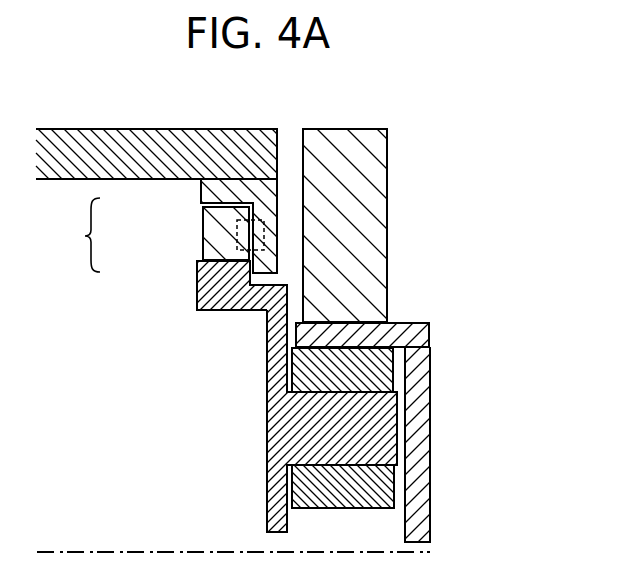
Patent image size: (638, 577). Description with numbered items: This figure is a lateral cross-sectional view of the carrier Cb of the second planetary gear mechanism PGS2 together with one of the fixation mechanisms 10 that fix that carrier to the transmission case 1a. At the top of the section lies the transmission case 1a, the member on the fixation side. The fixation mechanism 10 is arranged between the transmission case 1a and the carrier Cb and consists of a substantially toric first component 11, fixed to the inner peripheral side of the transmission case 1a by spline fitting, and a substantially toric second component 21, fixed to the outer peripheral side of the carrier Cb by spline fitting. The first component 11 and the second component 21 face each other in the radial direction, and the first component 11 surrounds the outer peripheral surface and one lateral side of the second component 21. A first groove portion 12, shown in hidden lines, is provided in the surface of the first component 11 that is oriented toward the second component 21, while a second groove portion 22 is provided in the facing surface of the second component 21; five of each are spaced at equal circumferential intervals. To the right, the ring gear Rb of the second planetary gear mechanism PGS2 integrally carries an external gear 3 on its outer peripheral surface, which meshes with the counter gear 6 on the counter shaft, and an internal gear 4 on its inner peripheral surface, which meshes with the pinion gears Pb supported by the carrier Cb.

The transmission case 1a is at (137, 147).
The fixation mechanism 10 is at (77, 235).
The first component 11 is at (207, 190).
The second component 21 is at (212, 227).
The first groove portion 12 is at (262, 220).
The second groove portion 22 is at (237, 249).
The counter gear 6 is at (398, 203).
The external gear 3 is at (414, 317).
The ring gear Rb is at (440, 334).
The internal gear 4 is at (399, 358).
The carrier Cb is at (258, 427).
The pinion gear Pb is at (364, 519).
The second planetary gear mechanism PGS2 is at (453, 463).